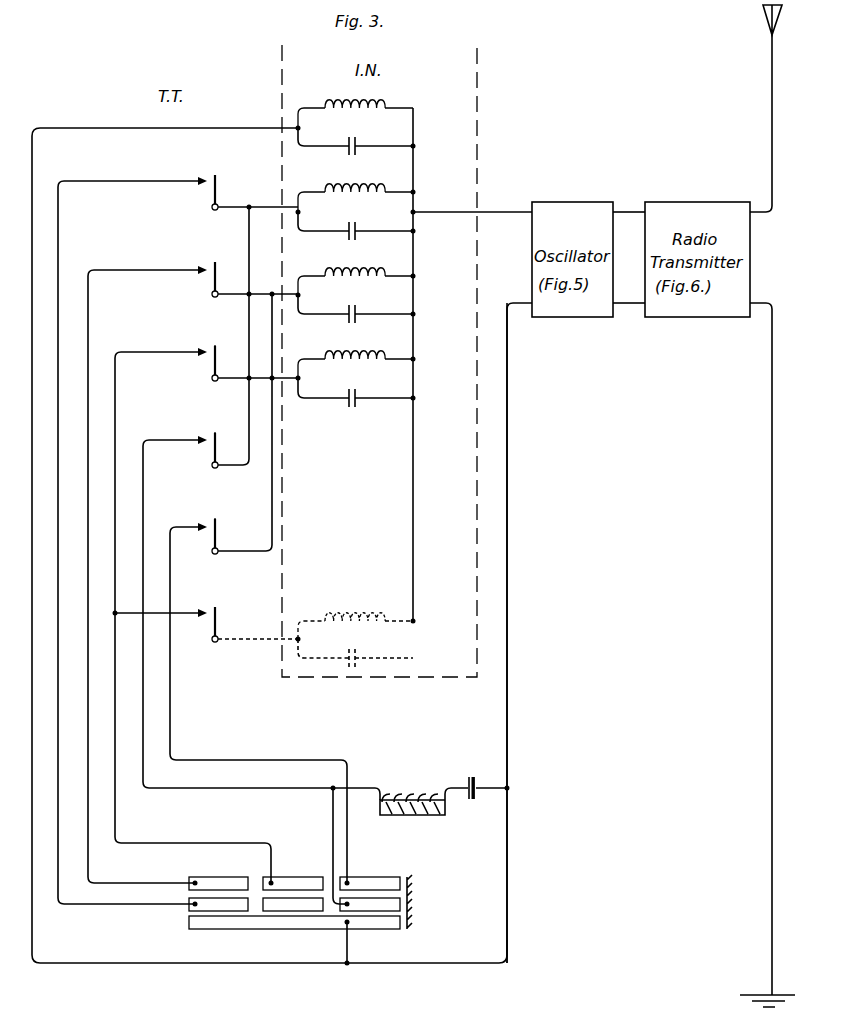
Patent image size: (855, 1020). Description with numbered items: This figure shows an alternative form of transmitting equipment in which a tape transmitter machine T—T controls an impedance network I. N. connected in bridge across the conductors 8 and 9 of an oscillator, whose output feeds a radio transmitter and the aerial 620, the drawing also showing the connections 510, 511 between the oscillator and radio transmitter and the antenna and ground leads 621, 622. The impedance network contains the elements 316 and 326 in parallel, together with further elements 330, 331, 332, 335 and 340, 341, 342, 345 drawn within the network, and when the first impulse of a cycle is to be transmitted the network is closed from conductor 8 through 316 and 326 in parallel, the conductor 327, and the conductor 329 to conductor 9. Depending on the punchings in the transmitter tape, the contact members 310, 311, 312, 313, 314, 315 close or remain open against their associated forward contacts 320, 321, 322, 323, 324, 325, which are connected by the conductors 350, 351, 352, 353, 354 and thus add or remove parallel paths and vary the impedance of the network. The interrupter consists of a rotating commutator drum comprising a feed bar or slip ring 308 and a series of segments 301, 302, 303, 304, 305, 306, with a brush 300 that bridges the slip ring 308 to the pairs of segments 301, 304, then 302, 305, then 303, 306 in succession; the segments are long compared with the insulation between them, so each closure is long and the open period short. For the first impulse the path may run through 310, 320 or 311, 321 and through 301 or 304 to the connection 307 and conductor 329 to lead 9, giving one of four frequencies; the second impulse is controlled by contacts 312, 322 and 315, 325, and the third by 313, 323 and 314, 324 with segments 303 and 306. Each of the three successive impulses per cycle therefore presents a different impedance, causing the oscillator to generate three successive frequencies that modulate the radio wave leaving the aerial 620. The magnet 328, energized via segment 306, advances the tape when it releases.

The conductor 8 is at (515, 211).
The conductor 9 is at (526, 303).
The brush 300 is at (412, 900).
The segment 301 is at (230, 877).
The segment 302 is at (298, 877).
The segment 303 is at (381, 877).
The segment 304 is at (218, 903).
The segment 305 is at (293, 903).
The segment 306 is at (370, 903).
The conductor 307 is at (347, 945).
The feed bar or slip ring 308 is at (294, 921).
The contact member 310 is at (218, 199).
The contact member 311 is at (255, 279).
The contact member 312 is at (255, 363).
The contact member 313 is at (217, 464).
The contact member 314 is at (218, 538).
The contact member 315 is at (222, 620).
The impedance element 316 is at (339, 108).
The forward contact 320 is at (204, 175).
The forward contact 321 is at (204, 266).
The forward contact 322 is at (204, 348).
The forward contact 323 is at (204, 434).
The forward contact 324 is at (202, 520).
The forward contact 325 is at (201, 610).
The impedance element 326 is at (357, 146).
The conductor 327 is at (231, 125).
The magnet 328 is at (418, 799).
The conductor 329 is at (509, 925).
The inductance coil 330 is at (346, 192).
The inductance coil 331 is at (348, 276).
The inductance coil 332 is at (348, 359).
The inductance coil 335 is at (352, 621).
The condenser 340 is at (357, 230).
The condenser 341 is at (357, 314).
The condenser 342 is at (357, 399).
The condenser 345 is at (357, 661).
The conductor 350 is at (138, 180).
The conductor 351 is at (138, 271).
The conductor 352 is at (138, 352).
The conductor 353 is at (166, 442).
The conductor 354 is at (171, 706).
The conductor 510 is at (629, 206).
The conductor 511 is at (632, 298).
The aerial 620 is at (762, 16).
The antenna lead 621 is at (772, 129).
The ground lead 622 is at (756, 643).